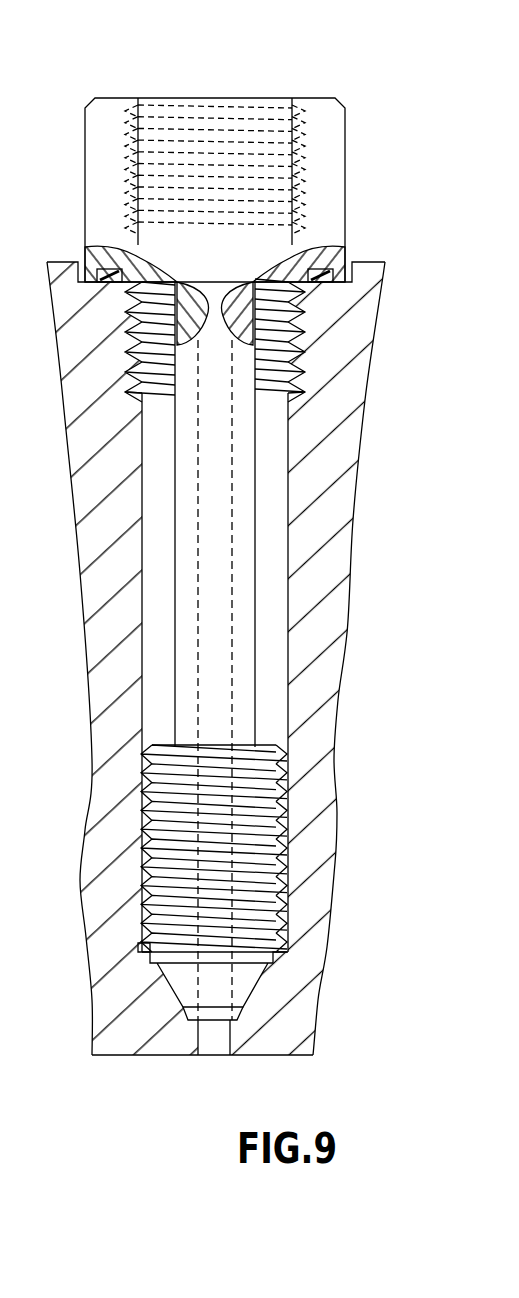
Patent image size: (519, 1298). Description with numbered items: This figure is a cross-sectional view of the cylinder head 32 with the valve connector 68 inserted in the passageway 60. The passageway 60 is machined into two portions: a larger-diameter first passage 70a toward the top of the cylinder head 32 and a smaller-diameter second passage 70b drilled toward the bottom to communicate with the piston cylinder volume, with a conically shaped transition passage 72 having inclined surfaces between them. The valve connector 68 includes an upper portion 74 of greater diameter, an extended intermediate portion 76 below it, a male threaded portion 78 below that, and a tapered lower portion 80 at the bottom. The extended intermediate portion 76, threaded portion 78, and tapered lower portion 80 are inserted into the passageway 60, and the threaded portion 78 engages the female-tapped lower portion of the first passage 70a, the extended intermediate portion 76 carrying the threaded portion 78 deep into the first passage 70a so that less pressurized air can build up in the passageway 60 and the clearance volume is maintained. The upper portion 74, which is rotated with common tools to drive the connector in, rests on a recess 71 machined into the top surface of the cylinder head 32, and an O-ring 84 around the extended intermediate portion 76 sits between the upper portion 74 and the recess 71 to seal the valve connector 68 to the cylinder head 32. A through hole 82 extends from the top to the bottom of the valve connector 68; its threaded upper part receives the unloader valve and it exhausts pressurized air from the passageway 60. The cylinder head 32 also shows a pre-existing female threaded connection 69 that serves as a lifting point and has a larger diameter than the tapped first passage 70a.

The valve connector 68 is at (228, 176).
The upper portion 74 is at (112, 123).
The through hole 82 is at (293, 153).
The recess 71 is at (88, 278).
The O-ring 84 is at (328, 282).
The pre-existing female threaded connection 69 is at (128, 349).
The first passage 70a is at (267, 487).
The extended intermediate portion 76 is at (255, 573).
The threaded portion 78 is at (257, 848).
The tapered lower portion 80 is at (250, 980).
The transition passage 72 is at (222, 1015).
The cylinder head 32 is at (302, 1030).
The second passage 70b is at (207, 1045).
The passageway 60 is at (222, 1042).